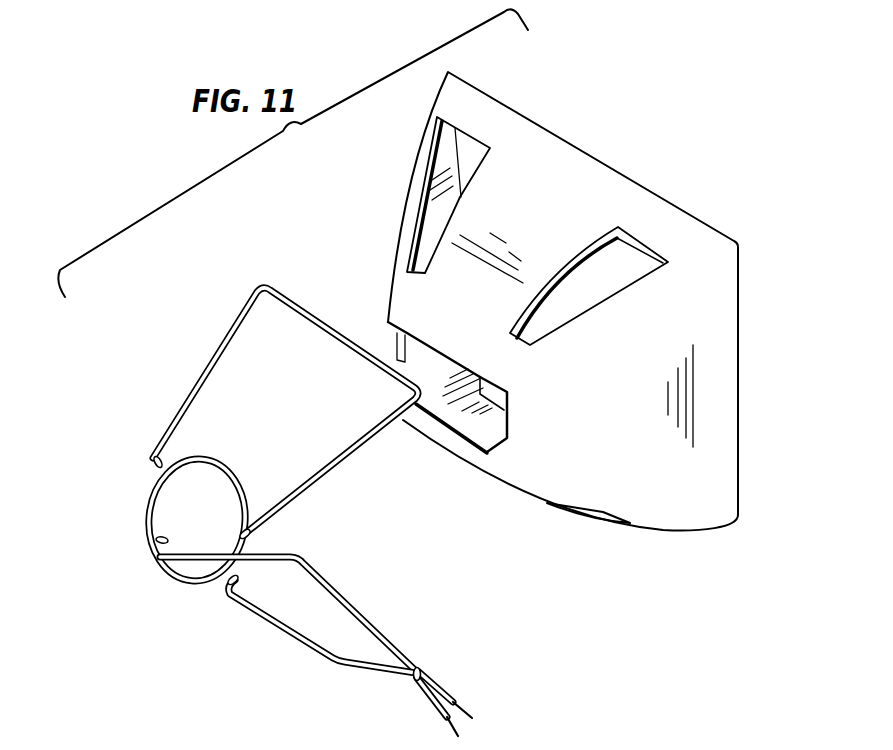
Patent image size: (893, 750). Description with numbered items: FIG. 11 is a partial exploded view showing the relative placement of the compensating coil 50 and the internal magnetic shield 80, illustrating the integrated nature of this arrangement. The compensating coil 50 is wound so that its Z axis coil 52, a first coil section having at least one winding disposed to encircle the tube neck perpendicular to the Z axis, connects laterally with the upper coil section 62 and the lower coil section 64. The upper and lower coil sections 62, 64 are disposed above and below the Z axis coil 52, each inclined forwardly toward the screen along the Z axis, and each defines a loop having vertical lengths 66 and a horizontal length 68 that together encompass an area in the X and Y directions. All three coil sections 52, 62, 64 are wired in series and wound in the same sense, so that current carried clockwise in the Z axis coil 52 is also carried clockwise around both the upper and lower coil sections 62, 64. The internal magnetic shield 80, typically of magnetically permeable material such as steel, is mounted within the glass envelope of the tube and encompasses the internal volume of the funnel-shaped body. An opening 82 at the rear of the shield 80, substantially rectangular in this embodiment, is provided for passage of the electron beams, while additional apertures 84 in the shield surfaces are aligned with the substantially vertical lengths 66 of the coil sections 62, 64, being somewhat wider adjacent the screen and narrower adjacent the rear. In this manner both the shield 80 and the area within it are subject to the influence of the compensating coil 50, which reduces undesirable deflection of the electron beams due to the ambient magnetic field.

The compensating coil 50 is at (368, 607).
The Z axis coil 52 is at (213, 477).
The upper coil section 62 is at (180, 407).
The lower coil section 64 is at (323, 660).
The vertical lengths 66 is at (238, 328).
The horizontal length 68 is at (313, 307).
The internal magnetic shield 80 is at (712, 486).
The opening 82 is at (509, 404).
The additional apertures 84 is at (433, 257).